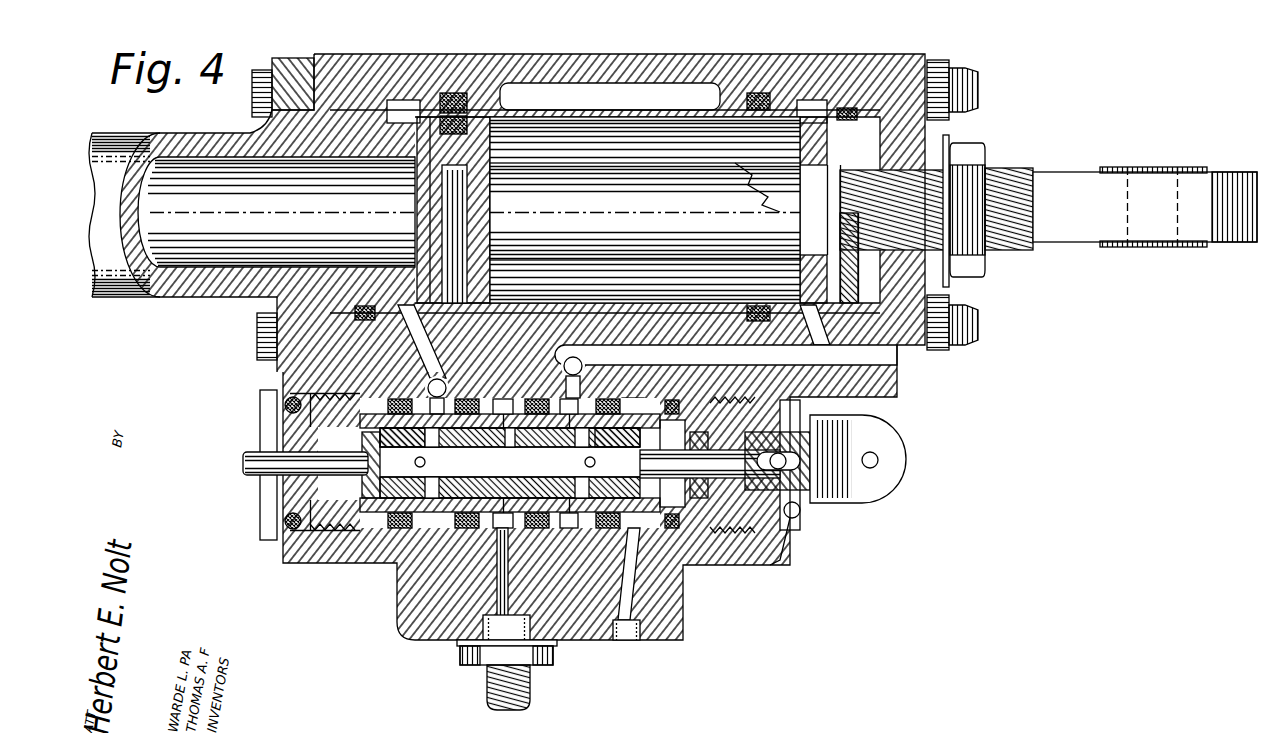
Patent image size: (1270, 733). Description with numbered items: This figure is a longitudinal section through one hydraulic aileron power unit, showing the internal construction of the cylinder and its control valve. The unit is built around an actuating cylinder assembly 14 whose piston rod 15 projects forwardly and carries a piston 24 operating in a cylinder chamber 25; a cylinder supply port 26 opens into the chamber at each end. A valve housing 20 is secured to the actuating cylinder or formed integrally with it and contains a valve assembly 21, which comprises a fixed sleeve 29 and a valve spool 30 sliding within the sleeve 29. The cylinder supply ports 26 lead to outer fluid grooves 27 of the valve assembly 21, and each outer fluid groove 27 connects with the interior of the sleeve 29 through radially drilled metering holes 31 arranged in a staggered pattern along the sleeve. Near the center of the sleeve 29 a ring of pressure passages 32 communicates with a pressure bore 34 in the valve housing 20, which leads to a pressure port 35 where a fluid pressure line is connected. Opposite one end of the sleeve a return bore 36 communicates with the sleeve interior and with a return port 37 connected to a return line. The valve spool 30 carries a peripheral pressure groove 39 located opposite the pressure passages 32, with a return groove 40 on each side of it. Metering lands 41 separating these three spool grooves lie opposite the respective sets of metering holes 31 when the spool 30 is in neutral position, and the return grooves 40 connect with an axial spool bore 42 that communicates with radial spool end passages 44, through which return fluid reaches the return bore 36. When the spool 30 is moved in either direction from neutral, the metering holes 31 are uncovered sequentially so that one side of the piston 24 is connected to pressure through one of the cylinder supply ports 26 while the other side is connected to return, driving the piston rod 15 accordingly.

The actuating cylinder assembly 14 is at (637, 47).
The piston rod 15 is at (1050, 186).
The valve housing 20 is at (713, 572).
The valve assembly 21 is at (396, 611).
The piston 24 is at (455, 165).
The cylinder chamber 25 is at (717, 210).
The cylinder supply ports 26 is at (413, 343).
The outer fluid grooves 27 is at (430, 410).
The fixed sleeve 29 is at (633, 400).
The valve spool 30 is at (618, 443).
The metering holes 31 is at (432, 412).
The pressure passages 32 is at (495, 495).
The pressure bore 34 is at (507, 577).
The pressure port 35 is at (500, 627).
The return bore 36 is at (633, 593).
The return port 37 is at (623, 633).
The pressure groove 39 is at (509, 440).
The return grooves 40 is at (422, 466).
The metering lands 41 is at (470, 470).
The axial spool bore 42 is at (385, 470).
The spool end passages 44 is at (368, 487).